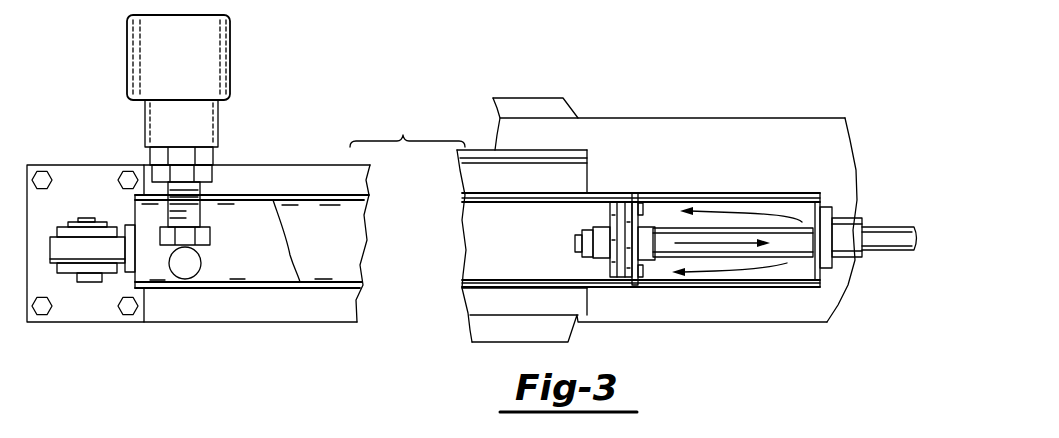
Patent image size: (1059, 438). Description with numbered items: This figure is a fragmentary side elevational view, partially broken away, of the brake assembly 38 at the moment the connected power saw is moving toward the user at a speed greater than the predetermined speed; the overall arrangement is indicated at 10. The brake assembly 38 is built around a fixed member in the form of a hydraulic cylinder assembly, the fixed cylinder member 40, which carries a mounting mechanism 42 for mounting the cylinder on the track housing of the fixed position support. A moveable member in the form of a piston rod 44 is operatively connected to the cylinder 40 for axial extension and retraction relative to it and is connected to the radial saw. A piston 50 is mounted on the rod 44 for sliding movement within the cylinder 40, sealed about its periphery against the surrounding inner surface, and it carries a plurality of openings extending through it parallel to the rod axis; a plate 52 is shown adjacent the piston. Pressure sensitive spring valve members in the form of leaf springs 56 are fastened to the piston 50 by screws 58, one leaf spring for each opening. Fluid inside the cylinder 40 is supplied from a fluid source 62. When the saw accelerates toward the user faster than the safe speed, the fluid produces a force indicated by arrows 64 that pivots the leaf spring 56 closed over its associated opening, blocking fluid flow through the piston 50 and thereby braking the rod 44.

The fuel cutoff and shutoff assembly 10 is at (284, 127).
The brake assembly 38 is at (643, 116).
The fixed cylinder member 40 is at (307, 195).
The mounting mechanism 42 is at (105, 165).
The piston rod 44 is at (802, 227).
The piston 50 is at (633, 286).
The mounting plate 52 is at (623, 203).
The leaf spring 56 is at (640, 244).
The screws 58 is at (642, 279).
The fluid source 62 is at (230, 57).
The arrows 64 is at (730, 217).